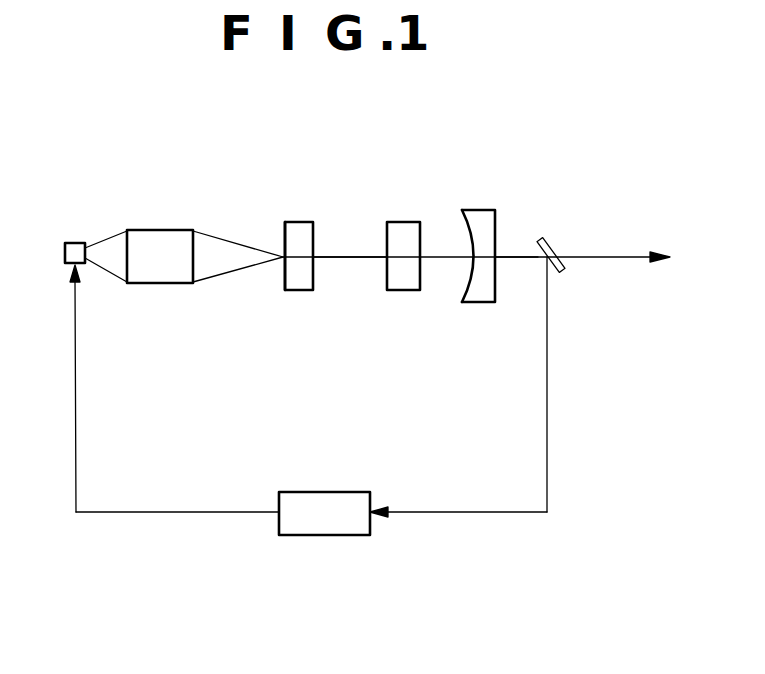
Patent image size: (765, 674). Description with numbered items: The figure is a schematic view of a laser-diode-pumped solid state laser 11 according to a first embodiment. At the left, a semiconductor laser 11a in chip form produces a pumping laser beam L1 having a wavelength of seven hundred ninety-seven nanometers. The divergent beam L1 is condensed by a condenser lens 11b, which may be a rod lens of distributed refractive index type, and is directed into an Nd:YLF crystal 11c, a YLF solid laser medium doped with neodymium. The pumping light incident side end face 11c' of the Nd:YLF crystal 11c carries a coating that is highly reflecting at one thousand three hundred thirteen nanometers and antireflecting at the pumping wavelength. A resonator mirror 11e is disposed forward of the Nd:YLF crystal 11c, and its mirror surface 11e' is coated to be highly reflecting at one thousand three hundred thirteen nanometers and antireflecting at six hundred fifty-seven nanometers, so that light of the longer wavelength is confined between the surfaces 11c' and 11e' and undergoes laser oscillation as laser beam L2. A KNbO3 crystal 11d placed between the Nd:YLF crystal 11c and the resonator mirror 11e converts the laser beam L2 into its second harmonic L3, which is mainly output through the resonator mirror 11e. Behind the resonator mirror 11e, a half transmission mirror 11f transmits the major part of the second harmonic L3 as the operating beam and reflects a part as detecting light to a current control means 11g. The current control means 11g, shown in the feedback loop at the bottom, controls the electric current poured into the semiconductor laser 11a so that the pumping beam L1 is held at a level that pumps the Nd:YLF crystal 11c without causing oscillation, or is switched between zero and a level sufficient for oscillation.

The laser-diode-pumped solid state laser 11 is at (356, 181).
The semiconductor laser 11a is at (75, 242).
The condenser lens 11b is at (162, 228).
The Nd:YLF crystal 11c is at (305, 226).
The pumping light incident side end face 11c' is at (252, 234).
The KNbO3 crystal 11d is at (405, 226).
The resonator mirror 11e is at (506, 228).
The mirror surface 11e' is at (475, 287).
The half transmission mirror 11f is at (551, 238).
The current control means 11g is at (345, 536).
The laser beam L1 is at (220, 274).
The laser beam L2 is at (350, 263).
The second harmonic L3 is at (518, 260).